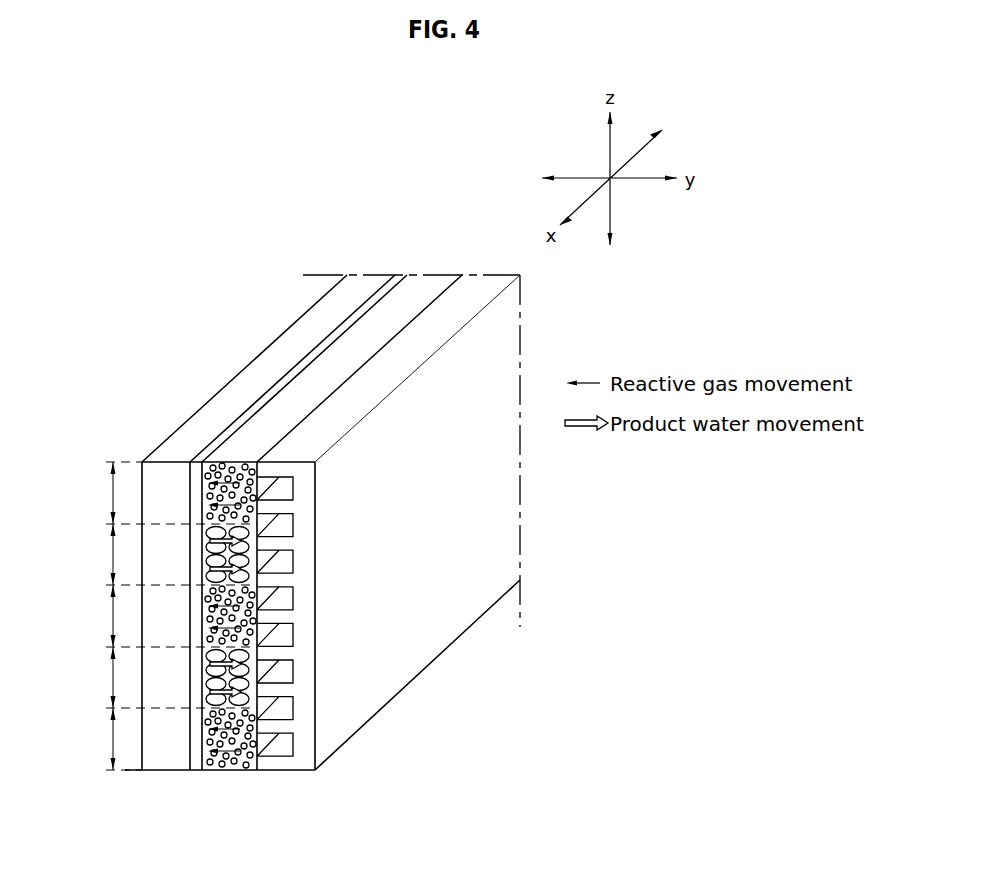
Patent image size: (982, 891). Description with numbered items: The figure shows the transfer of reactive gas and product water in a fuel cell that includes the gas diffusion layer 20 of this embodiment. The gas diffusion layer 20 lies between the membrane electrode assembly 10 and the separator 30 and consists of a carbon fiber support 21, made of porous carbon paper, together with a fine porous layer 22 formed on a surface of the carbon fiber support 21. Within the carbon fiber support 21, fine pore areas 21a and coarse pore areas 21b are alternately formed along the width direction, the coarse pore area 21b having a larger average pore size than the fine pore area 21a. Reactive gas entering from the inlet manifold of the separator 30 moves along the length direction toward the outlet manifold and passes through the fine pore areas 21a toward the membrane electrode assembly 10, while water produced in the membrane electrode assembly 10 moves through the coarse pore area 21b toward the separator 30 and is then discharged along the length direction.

The membrane electrode assembly 10 is at (163, 754).
The gas diffusion layer 20 is at (253, 855).
The carbon fiber support 21 is at (230, 766).
The fine pore area 21a is at (85, 616).
The coarse pore area 21b is at (86, 616).
The fine porous layer 22 is at (198, 766).
The separator 30 is at (283, 760).